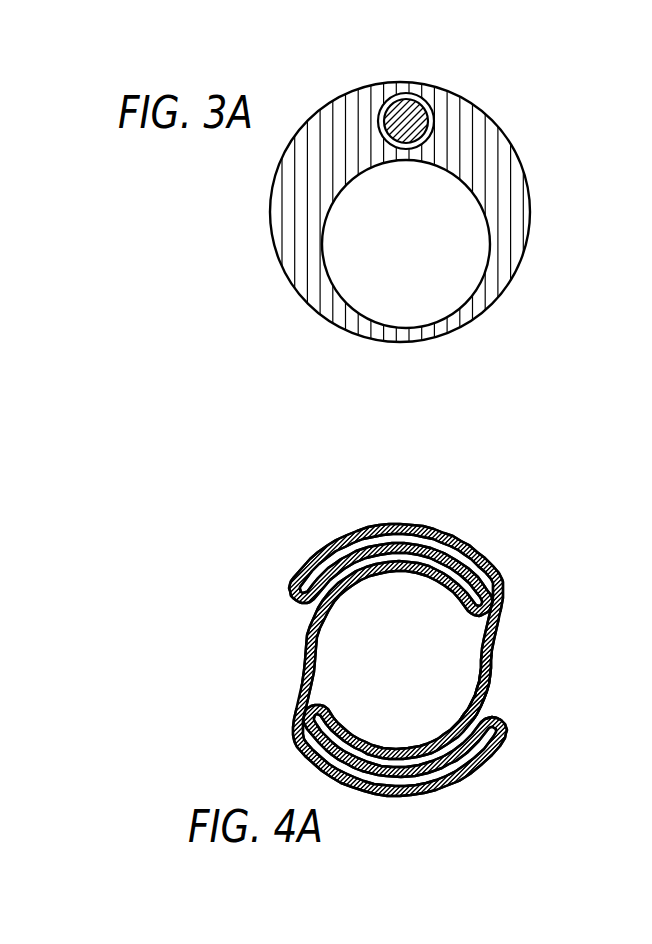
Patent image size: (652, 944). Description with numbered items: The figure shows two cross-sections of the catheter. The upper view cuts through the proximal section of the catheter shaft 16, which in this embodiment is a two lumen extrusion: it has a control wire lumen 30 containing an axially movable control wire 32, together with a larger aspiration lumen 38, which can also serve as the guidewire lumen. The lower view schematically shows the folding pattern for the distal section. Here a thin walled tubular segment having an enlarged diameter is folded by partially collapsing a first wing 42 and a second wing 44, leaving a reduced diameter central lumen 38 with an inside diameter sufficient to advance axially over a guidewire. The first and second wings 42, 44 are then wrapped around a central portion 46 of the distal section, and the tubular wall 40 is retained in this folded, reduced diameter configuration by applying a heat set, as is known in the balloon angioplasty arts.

In FIG. 3A, the catheter shaft 16 is at (302, 230).
In FIG. 3A, the control wire lumen 30 is at (388, 97).
In FIG. 3A, the control wire 32 is at (422, 98).
In FIG. 3A, the aspiration lumen 38 is at (440, 270).
In FIG. 4A, the aspiration lumen 38 is at (407, 637).
In FIG. 4A, the tubular wall 40 is at (308, 657).
In FIG. 4A, the first wing 42 is at (420, 794).
In FIG. 4A, the second wing 44 is at (360, 531).
In FIG. 4A, the central portion 46 is at (482, 705).